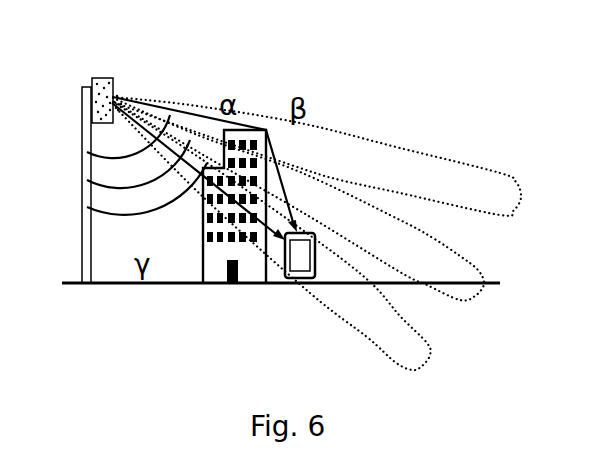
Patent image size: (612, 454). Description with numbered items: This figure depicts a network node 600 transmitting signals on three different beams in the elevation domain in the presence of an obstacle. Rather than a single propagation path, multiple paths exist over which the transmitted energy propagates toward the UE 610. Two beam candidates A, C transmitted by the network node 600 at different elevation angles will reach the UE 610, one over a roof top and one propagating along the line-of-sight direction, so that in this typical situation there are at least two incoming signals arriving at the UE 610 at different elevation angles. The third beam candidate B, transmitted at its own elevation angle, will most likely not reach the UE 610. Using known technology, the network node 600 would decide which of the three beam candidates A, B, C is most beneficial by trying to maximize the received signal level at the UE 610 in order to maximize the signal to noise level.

The network node 600 is at (111, 78).
The UE 610 is at (300, 279).
The beam candidate A is at (317, 156).
The beam candidate B is at (298, 199).
The beam candidate C is at (272, 236).